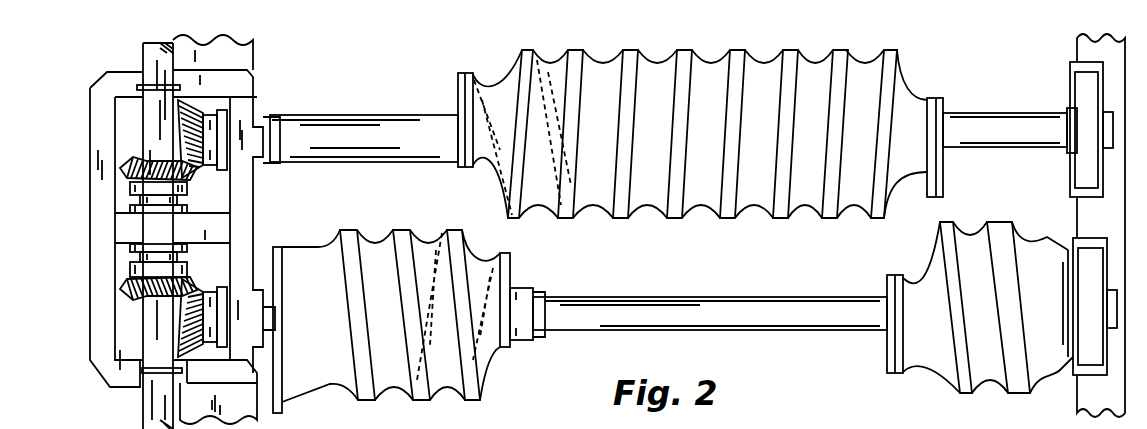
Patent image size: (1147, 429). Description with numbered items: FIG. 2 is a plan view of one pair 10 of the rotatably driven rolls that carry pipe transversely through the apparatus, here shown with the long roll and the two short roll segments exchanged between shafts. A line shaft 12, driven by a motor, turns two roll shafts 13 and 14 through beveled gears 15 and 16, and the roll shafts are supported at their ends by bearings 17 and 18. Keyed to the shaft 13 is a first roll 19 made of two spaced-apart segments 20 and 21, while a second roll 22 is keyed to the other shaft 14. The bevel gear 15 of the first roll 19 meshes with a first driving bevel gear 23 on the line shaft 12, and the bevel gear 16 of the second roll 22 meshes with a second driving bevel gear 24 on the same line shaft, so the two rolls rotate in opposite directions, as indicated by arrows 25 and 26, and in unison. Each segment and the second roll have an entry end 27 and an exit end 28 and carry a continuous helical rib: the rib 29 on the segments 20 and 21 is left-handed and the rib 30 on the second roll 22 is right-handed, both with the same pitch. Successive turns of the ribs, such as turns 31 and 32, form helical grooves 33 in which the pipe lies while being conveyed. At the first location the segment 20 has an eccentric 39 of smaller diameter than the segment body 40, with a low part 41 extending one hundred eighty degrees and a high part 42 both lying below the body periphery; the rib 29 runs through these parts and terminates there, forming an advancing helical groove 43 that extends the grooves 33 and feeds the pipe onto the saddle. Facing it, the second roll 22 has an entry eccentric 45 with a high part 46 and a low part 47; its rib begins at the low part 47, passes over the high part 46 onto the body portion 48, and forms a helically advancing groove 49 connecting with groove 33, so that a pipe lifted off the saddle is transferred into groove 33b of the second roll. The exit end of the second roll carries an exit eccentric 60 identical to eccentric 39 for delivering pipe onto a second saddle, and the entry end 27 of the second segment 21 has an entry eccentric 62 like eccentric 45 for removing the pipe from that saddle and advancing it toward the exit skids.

The pair of rolls 10 is at (703, 267).
The line shaft 12 is at (146, 54).
The roll shaft 13 is at (761, 331).
The roll shaft 14 is at (417, 113).
The bevel gear 15 is at (216, 297).
The bevel gear 16 is at (205, 160).
The bearing 17 is at (247, 277).
The bearing 18 is at (1082, 171).
The first roll 19 is at (495, 343).
The segment 20 is at (314, 258).
The segment 21 is at (1047, 240).
The second roll 22 is at (682, 48).
The first driving bevel gear 23 is at (120, 289).
The second driving bevel gear 24 is at (120, 167).
The arrow 25 is at (593, 309).
The arrow 26 is at (342, 136).
The entry end 27 is at (457, 100).
The exit end 28 is at (950, 108).
The helical rib 29 is at (390, 233).
The helical rib 30 is at (738, 57).
The rib turn 31 is at (350, 231).
The rib turn 32 is at (799, 38).
The helical groove 33 is at (822, 60).
The helical groove 33b is at (549, 60).
The eccentric 39 is at (507, 277).
The segment body 40 is at (338, 383).
The low part 41 is at (512, 343).
The high part 42 is at (471, 255).
The advancing helical groove 43 is at (478, 263).
The entry eccentric 45 is at (460, 93).
The high part 46 is at (492, 86).
The low part 47 is at (485, 166).
The body portion 48 is at (717, 137).
The helically advancing groove 49 is at (503, 70).
The exit eccentric 60 is at (912, 108).
The entry eccentric 62 is at (935, 351).